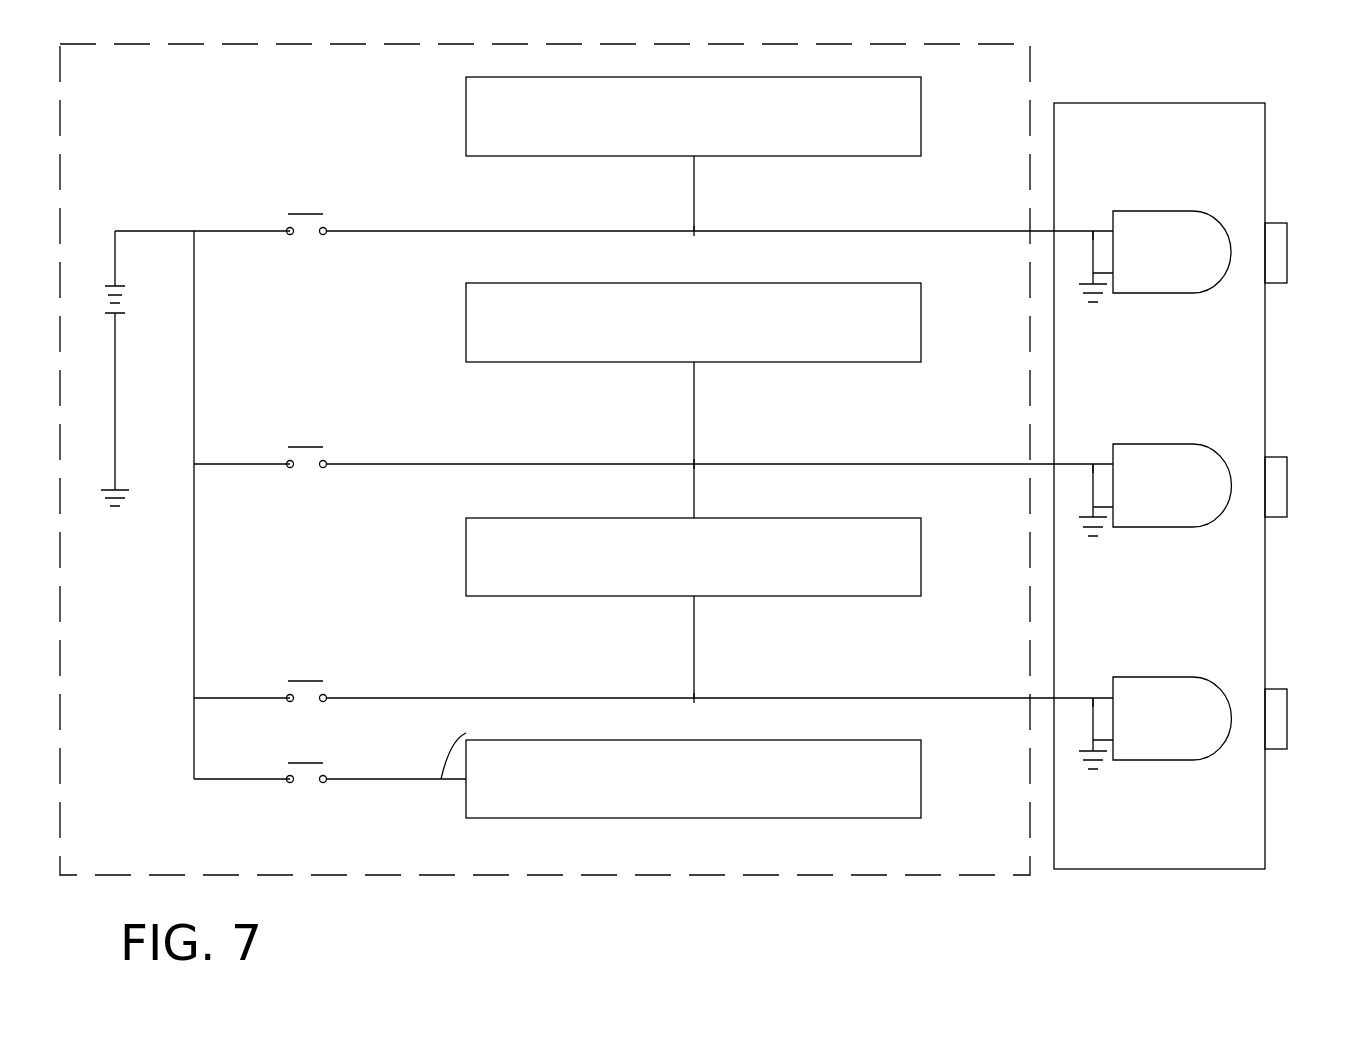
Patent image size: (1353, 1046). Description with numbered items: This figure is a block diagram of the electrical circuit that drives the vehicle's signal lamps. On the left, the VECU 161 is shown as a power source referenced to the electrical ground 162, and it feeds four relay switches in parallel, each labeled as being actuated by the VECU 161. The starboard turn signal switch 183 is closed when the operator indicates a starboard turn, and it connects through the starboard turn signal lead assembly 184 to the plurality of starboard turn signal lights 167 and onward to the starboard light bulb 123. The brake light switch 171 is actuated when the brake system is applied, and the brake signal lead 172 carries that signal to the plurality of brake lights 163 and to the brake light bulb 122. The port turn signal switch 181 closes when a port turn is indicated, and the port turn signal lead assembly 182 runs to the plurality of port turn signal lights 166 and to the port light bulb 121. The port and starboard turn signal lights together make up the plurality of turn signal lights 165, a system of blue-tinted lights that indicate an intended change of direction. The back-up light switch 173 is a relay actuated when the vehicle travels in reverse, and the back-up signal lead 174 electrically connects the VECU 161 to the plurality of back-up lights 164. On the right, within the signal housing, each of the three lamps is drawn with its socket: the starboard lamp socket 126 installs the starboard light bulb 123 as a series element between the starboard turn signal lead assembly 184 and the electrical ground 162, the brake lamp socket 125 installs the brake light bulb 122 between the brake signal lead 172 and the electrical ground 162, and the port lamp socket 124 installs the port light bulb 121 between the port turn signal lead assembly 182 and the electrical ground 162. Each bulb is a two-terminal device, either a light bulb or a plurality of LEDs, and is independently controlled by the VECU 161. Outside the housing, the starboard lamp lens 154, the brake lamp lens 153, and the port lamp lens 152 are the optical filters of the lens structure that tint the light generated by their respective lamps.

The port light bulb 121 is at (1183, 711).
The brake light bulb 122 is at (1183, 478).
The starboard light bulb 123 is at (1183, 245).
The port lamp socket 124 is at (1093, 697).
The brake lamp socket 125 is at (1093, 463).
The starboard lamp socket 126 is at (1093, 230).
The port lamp lens 152 is at (1287, 719).
The brake lamp lens 153 is at (1287, 487).
The starboard lamp lens 154 is at (1287, 253).
The VECU 161 is at (150, 287).
The electrical ground 162 is at (117, 512).
The plurality of brake lights 163 is at (842, 331).
The plurality of back-up lights 164 is at (842, 787).
The plurality of turn signal lights 165 is at (678, 326).
The plurality of port turn signal lights 166 is at (842, 565).
The plurality of starboard turn signal lights 167 is at (842, 126).
The brake light switch 171 is at (330, 458).
The brake signal lead 172 is at (695, 464).
The back-up light switch 173 is at (330, 777).
The back-up signal lead 174 is at (466, 722).
The port turn signal switch 181 is at (330, 692).
The port turn signal lead assembly 182 is at (695, 698).
The starboard turn signal switch 183 is at (330, 225).
The starboard turn signal lead assembly 184 is at (695, 232).